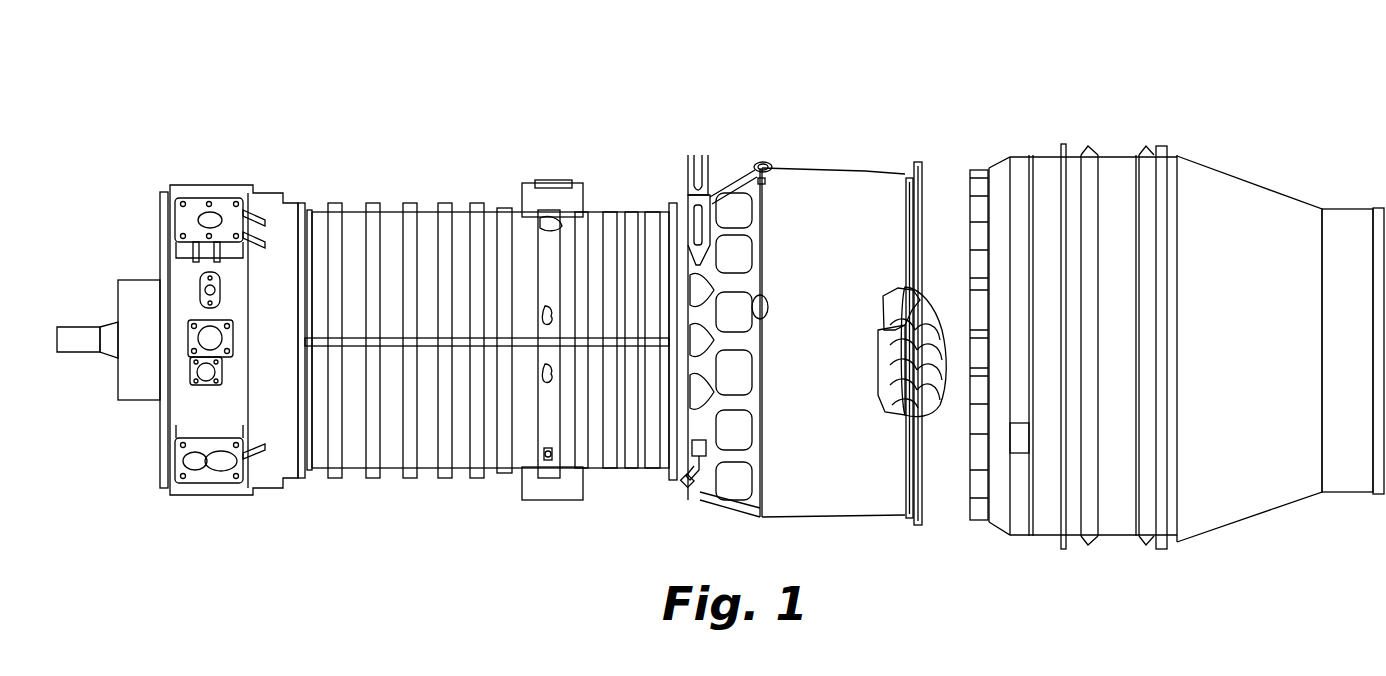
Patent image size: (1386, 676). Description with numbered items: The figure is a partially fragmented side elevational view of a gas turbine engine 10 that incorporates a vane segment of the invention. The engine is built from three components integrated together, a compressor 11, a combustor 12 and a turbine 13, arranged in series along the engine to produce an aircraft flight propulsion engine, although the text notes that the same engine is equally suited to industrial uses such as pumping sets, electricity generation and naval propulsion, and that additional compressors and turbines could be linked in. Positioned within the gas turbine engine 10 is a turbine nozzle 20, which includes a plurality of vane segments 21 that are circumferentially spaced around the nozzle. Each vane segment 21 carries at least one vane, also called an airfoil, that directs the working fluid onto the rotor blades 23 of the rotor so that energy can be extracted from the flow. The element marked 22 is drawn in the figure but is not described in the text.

The gas turbine engine 10 is at (976, 92).
The compressor 11 is at (355, 212).
The combustor 12 is at (865, 171).
The turbine 13 is at (1118, 156).
The turbine nozzle 20 is at (875, 327).
The vane segments 21 is at (924, 326).
The shroud ring 22 is at (895, 407).
The rotor blades 23 is at (933, 410).